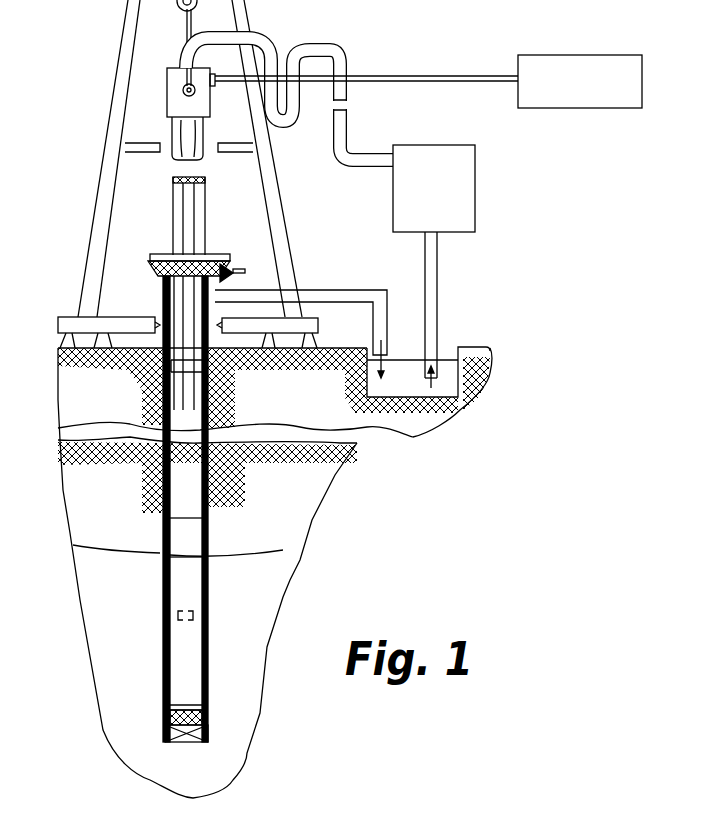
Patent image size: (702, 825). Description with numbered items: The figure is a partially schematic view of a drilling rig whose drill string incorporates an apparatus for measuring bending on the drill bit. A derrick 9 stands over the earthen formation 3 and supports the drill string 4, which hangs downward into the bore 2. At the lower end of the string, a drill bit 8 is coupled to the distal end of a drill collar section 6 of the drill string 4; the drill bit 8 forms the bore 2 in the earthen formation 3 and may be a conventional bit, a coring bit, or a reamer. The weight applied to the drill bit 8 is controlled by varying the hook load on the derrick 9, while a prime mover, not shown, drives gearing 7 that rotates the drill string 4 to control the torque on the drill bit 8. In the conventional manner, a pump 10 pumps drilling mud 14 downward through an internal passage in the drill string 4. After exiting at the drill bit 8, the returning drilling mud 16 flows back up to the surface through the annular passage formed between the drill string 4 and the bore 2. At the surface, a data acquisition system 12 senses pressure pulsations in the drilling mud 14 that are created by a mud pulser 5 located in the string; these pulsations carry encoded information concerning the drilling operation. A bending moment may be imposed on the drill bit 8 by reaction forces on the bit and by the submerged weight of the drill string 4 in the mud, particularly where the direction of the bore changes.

The bore 2 is at (170, 688).
The earthen formation 3 is at (78, 508).
The drill string 4 is at (196, 511).
The mud pulser 5 is at (197, 616).
The drill collar section 6 is at (180, 589).
The gearing 7 is at (227, 262).
The drill bit 8 is at (180, 718).
The derrick 9 is at (287, 207).
The pump 10 is at (459, 173).
The data acquisition system 12 is at (627, 86).
The drilling mud 14 is at (435, 395).
The returning drilling mud 16 is at (382, 364).